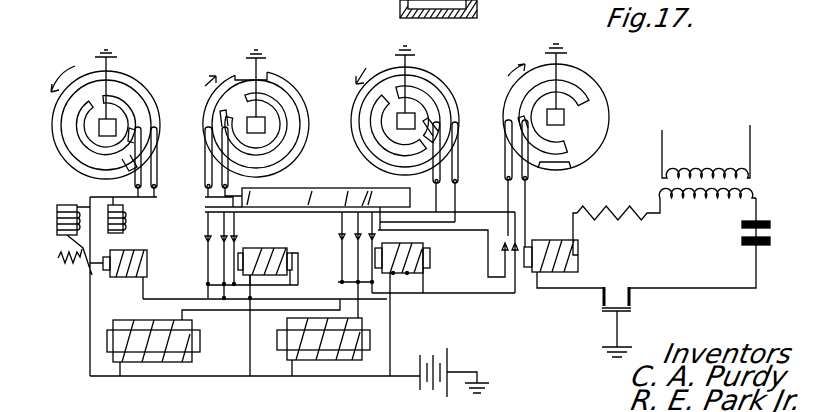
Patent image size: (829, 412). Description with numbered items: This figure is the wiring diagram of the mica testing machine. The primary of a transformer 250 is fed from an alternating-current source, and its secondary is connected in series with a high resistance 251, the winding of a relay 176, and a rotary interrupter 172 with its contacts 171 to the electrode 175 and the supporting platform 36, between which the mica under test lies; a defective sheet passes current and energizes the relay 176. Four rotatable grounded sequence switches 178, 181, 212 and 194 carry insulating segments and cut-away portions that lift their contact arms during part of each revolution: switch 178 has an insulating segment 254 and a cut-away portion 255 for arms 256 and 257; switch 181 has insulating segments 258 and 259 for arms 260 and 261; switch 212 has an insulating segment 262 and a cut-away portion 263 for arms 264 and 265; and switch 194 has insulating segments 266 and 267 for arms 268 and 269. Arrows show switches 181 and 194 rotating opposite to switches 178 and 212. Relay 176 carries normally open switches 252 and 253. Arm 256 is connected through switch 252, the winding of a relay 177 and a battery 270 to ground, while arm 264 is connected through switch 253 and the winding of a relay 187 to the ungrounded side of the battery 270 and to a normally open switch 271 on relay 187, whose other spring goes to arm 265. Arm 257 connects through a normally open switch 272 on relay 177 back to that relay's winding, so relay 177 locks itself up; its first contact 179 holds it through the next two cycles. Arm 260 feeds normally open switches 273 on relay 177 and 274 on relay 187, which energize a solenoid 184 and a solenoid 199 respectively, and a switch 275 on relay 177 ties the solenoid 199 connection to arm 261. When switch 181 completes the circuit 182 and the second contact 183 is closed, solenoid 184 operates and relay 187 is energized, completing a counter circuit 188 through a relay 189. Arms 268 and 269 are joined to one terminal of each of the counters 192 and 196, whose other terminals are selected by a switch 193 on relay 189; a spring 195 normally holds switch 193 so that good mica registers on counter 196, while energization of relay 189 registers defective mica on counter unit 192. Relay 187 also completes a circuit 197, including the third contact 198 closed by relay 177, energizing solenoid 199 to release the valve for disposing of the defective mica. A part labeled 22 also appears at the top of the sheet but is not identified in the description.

The housing member 22 is at (302, 9).
The insulating segment 266 is at (118, 75).
The sequence switch 194 is at (150, 92).
The insulating segment 267 is at (133, 110).
The contact arm 264 is at (143, 133).
The contact arm 265 is at (158, 150).
The contact arm 269 is at (141, 170).
The contact arm 268 is at (157, 190).
The portion cut away 263 is at (246, 78).
The sequence switch 212 is at (290, 92).
The insulating segment 262 is at (288, 113).
The insulating segment 259 is at (364, 88).
The insulating segment 258 is at (420, 84).
The sequence switch 181 is at (445, 92).
The contact arm 260 is at (441, 160).
The contact arm 261 is at (459, 140).
The circuit 182 is at (448, 202).
The sequence switch 178 is at (610, 104).
The portion cut away 255 is at (570, 171).
The insulating segment 254 is at (565, 90).
The contact arm 256 is at (505, 122).
The contact arm 257 is at (520, 126).
The counter mechanism 196 is at (68, 205).
The spring 195 is at (74, 244).
The switch 193 is at (80, 265).
The counter unit 192 is at (123, 220).
The relay 189 is at (147, 261).
The normal open switch 274 is at (198, 280).
The circuit 197 is at (235, 312).
The solenoid 199 is at (165, 367).
The counter circuit 188 is at (320, 188).
The normal open switch 271 is at (265, 200).
The switch 275 is at (328, 200).
The normal open switch 272 is at (388, 200).
The normal open switch 273 is at (378, 188).
The relay 187 is at (268, 237).
The third contact 198 is at (333, 248).
The first contact 179 is at (342, 262).
The relay 177 is at (430, 260).
The second contact 183 is at (387, 299).
The solenoid 184 is at (328, 360).
The battery 270 is at (450, 348).
The normal open switch 253 is at (510, 240).
The normal open switch 252 is at (519, 240).
The relay 176 is at (578, 249).
The high resistance 251 is at (648, 215).
The transformer 250 is at (740, 174).
The electrode 175 is at (770, 225).
The supporting platform 36 is at (800, 240).
The spring contacts 171 is at (602, 296).
The rotary switch or interrupter 172 is at (632, 305).